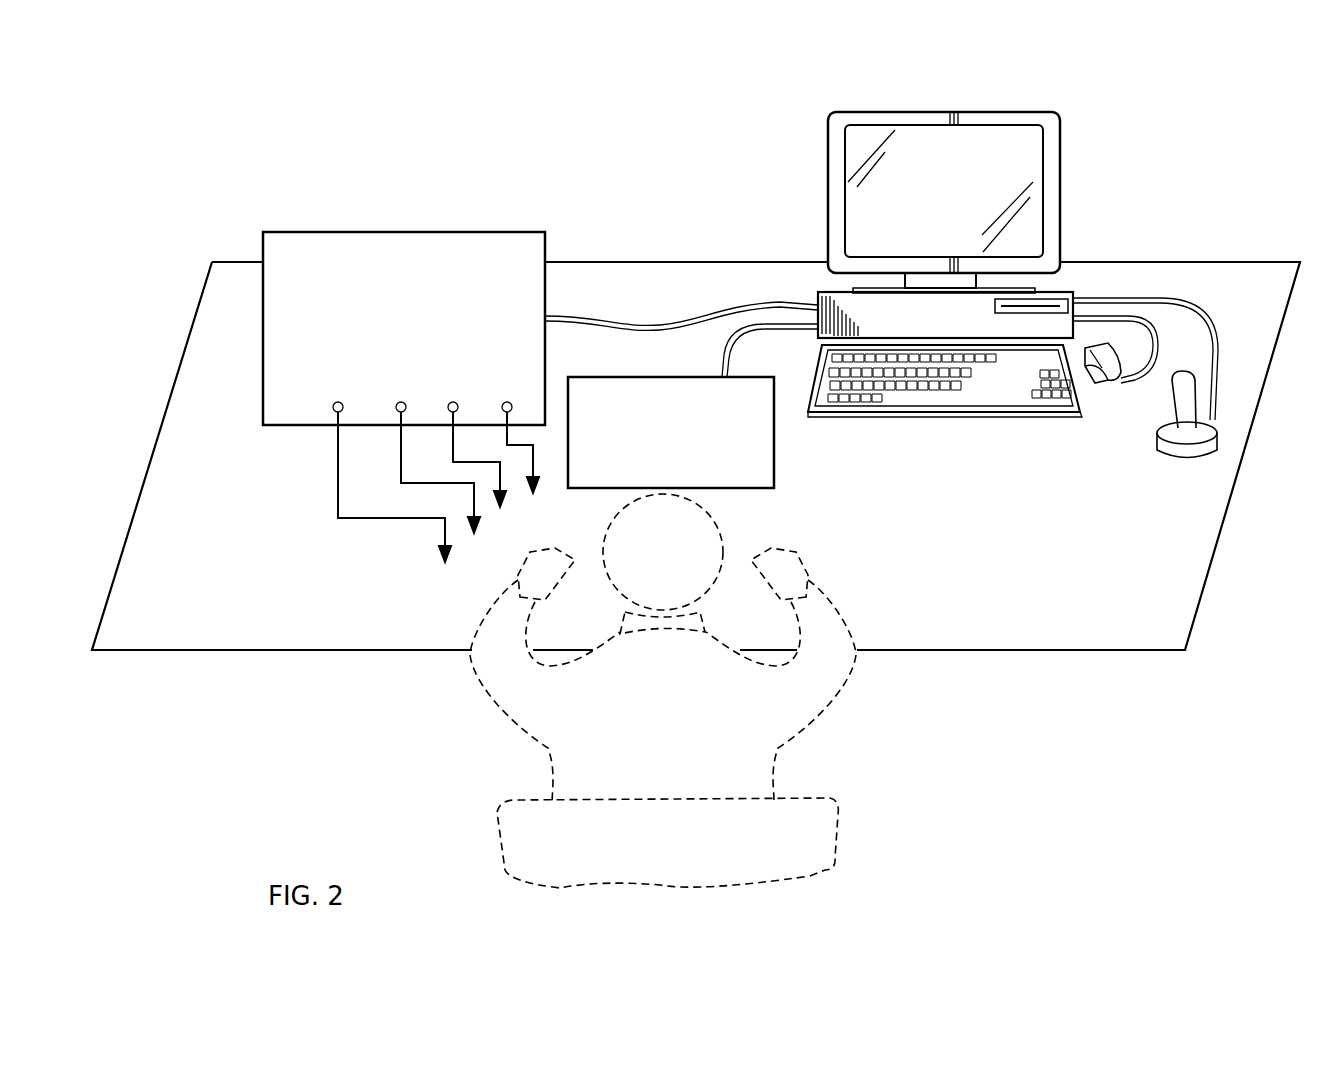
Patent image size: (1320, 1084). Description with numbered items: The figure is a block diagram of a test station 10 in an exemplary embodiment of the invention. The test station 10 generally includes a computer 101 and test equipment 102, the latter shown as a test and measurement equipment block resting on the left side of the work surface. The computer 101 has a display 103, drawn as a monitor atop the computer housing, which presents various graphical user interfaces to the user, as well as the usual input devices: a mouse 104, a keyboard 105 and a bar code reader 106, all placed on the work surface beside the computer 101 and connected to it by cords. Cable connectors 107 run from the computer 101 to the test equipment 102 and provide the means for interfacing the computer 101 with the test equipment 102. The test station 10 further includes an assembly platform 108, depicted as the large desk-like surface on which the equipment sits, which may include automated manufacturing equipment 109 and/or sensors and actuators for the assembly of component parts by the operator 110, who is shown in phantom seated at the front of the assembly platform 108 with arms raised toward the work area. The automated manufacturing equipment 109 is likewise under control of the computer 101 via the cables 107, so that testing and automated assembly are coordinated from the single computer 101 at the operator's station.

The test station 10 is at (666, 82).
The computer 101 is at (995, 207).
The test equipment 102 is at (440, 246).
The display 103 is at (913, 199).
The mouse 104 is at (1092, 375).
The keyboard 105 is at (955, 417).
The bar code reader 106 is at (1172, 458).
The cable connectors 107 is at (580, 318).
The assembly platform 108 is at (930, 511).
The automated manufacturing equipment 109 is at (775, 453).
The operator 110 is at (758, 757).